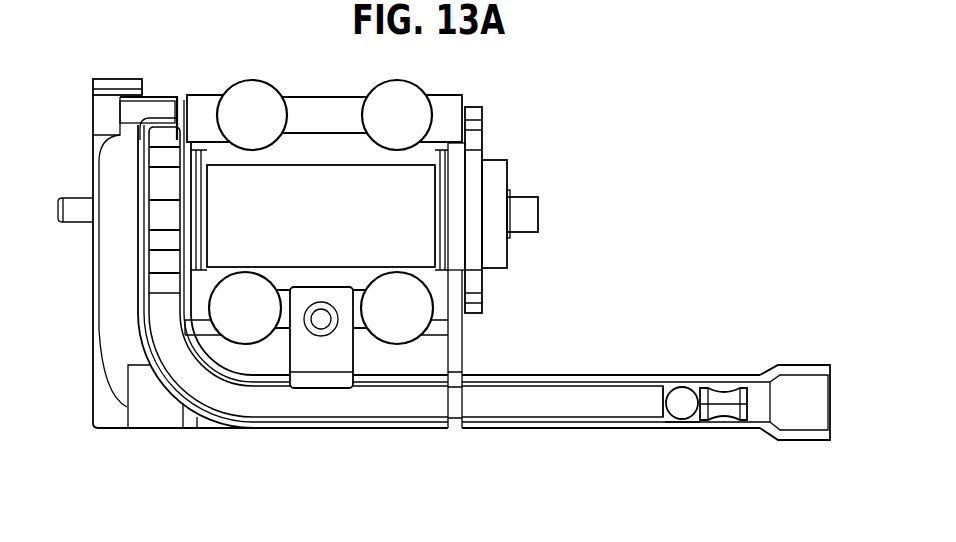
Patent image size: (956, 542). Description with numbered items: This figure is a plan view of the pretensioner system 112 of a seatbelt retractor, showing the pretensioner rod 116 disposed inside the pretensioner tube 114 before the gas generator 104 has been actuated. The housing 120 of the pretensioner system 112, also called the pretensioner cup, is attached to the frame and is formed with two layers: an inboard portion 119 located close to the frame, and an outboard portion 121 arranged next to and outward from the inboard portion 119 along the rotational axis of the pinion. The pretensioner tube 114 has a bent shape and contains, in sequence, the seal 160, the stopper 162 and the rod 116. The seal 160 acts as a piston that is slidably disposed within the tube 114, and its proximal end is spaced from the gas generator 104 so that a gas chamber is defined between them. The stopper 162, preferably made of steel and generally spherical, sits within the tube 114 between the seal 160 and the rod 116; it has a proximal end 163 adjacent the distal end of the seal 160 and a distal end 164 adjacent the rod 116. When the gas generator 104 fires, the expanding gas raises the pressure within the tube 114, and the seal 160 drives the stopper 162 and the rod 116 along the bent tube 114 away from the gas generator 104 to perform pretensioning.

The gas generator 104 is at (818, 397).
The pretensioner system 112 is at (137, 434).
The pretensioner tube 114 is at (614, 430).
The pretensioner rod 116 is at (507, 398).
The inboard portion 119 is at (164, 104).
The housing 120 is at (146, 74).
The outboard portion 121 is at (102, 78).
The seal 160 is at (727, 392).
The stopper 162 is at (685, 388).
The proximal end 163 is at (701, 421).
The distal end 164 is at (667, 383).